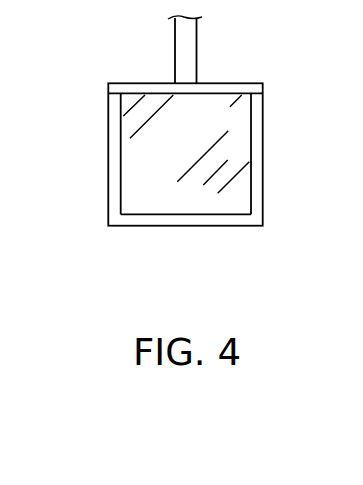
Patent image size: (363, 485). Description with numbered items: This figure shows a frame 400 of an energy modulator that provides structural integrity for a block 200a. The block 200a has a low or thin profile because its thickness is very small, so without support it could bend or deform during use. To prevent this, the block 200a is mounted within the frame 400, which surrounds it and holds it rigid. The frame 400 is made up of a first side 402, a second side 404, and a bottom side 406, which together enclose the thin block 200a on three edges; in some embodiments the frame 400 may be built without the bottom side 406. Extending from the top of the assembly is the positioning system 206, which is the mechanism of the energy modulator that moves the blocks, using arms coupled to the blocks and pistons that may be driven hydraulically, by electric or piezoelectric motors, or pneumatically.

The positioning system 206 is at (198, 57).
The block 200a is at (243, 118).
The frame 400 is at (258, 148).
The first side 402 is at (108, 173).
The second side 404 is at (260, 207).
The bottom side 406 is at (202, 226).